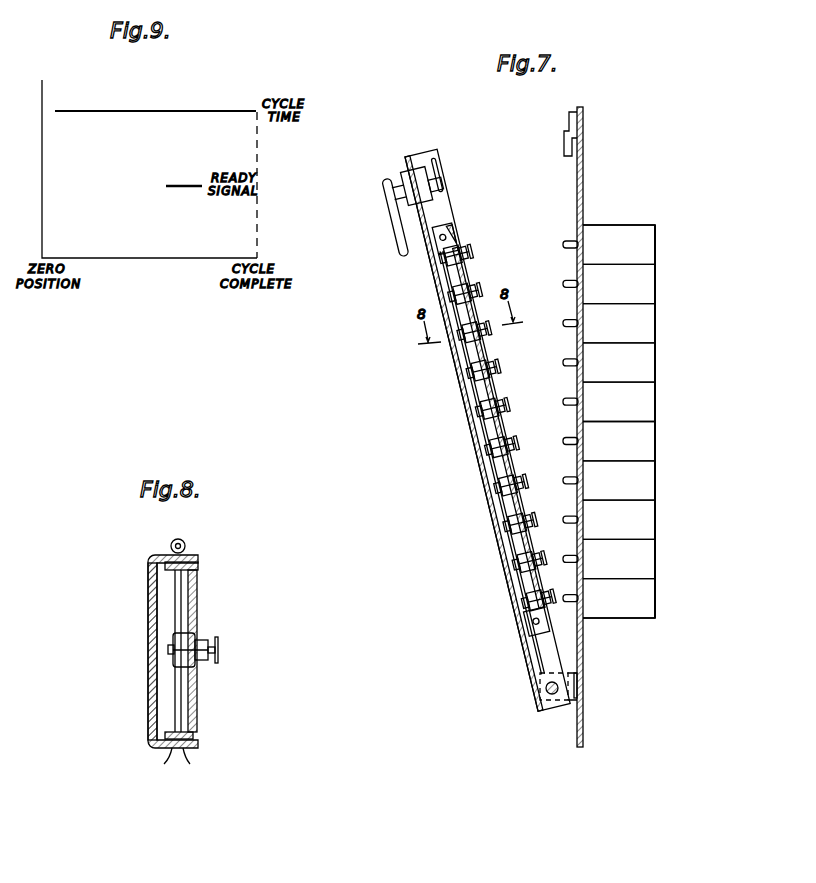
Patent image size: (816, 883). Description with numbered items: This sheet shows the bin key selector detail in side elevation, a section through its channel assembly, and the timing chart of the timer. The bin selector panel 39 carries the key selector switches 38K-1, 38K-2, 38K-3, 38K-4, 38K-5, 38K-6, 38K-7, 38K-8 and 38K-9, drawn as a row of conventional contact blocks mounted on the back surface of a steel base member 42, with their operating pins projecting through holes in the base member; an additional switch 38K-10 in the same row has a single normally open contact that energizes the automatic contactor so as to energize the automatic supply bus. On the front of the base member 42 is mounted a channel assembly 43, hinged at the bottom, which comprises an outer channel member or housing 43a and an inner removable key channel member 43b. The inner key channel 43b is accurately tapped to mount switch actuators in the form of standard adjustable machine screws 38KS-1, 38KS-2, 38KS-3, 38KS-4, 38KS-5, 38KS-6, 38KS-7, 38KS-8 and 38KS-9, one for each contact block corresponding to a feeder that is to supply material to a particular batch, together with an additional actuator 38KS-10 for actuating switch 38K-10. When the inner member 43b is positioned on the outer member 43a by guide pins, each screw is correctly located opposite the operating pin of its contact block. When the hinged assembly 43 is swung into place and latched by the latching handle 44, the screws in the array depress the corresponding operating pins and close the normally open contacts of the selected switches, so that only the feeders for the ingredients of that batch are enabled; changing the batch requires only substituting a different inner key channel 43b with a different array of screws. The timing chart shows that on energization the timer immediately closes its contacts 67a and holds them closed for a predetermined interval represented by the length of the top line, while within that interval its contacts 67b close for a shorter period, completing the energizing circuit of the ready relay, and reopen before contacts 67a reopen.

In FIG. 7, the bin selector panel 39 is at (533, 193).
In FIG. 7, the steel base member 42 is at (584, 160).
In FIG. 8, the channel assembly 43 is at (148, 620).
In FIG. 7, the channel assembly 43 is at (455, 412).
In FIG. 8, the outer channel member 43a is at (153, 702).
In FIG. 7, the outer channel member 43a is at (482, 470).
In FIG. 8, the inner removable key channel member 43b is at (195, 698).
In FIG. 7, the inner removable key channel member 43b is at (541, 630).
In FIG. 7, the latching handle 44 is at (392, 231).
In FIG. 7, the key selector switch 38K-1 is at (656, 245).
In FIG. 7, the key selector switch 38K-2 is at (656, 284).
In FIG. 7, the key selector switch 38K-3 is at (656, 324).
In FIG. 7, the key selector switch 38K-4 is at (656, 363).
In FIG. 7, the key selector switch 38K-5 is at (656, 402).
In FIG. 7, the key selector switch 38K-6 is at (656, 442).
In FIG. 7, the key selector switch 38K-7 is at (656, 481).
In FIG. 7, the key selector switch 38K-8 is at (656, 520).
In FIG. 7, the key selector switch 38K-9 is at (656, 560).
In FIG. 7, the additional switch 38K-10 is at (656, 599).
In FIG. 7, the switch actuator 38KS-1 is at (474, 253).
In FIG. 7, the switch actuator 38KS-2 is at (465, 293).
In FIG. 8, the switch actuator 38KS-3 is at (217, 642).
In FIG. 7, the switch actuator 38KS-3 is at (492, 330).
In FIG. 7, the switch actuator 38KS-4 is at (501, 368).
In FIG. 7, the switch actuator 38KS-5 is at (510, 405).
In FIG. 7, the switch actuator 38KS-6 is at (519, 445).
In FIG. 7, the switch actuator 38KS-7 is at (528, 483).
In FIG. 7, the switch actuator 38KS-8 is at (510, 530).
In FIG. 7, the switch actuator 38KS-9 is at (518, 566).
In FIG. 7, the additional actuator 38KS-10 is at (525, 604).
In FIG. 9, the timer contacts 67a is at (101, 108).
In FIG. 9, the timer contacts 67b is at (171, 183).